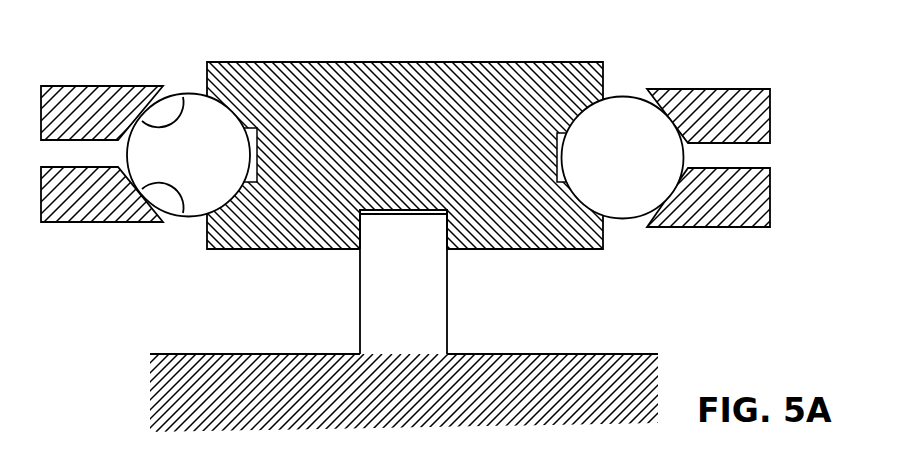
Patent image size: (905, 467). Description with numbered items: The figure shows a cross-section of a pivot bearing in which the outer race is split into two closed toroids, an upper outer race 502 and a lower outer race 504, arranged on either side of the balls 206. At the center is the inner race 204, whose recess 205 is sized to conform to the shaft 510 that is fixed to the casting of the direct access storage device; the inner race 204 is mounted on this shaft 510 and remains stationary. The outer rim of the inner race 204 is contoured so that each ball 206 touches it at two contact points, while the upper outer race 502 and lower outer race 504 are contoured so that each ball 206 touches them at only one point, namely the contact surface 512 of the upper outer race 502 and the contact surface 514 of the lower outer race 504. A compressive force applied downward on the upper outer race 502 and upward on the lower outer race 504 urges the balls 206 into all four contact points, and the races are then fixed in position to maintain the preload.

The inner race 204 is at (578, 62).
The recess 205 is at (450, 253).
The ball 206 is at (211, 165).
The upper outer race 502 is at (63, 85).
The lower outer race 504 is at (63, 224).
The shaft 510 is at (368, 312).
The contact surface of the upper outer race 512 is at (180, 117).
The contact surface of the lower outer race 514 is at (179, 193).